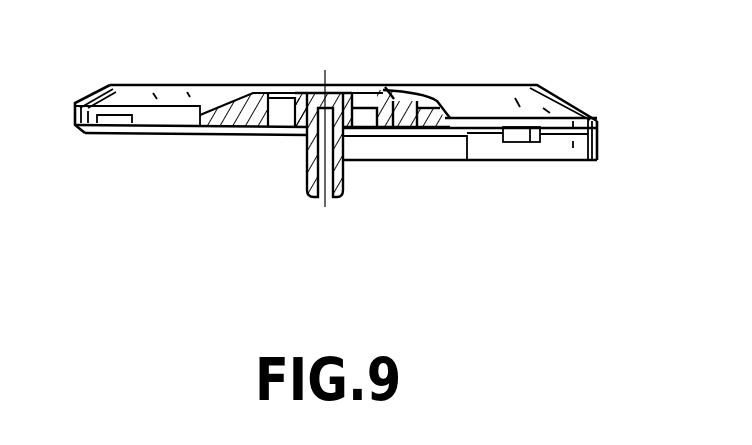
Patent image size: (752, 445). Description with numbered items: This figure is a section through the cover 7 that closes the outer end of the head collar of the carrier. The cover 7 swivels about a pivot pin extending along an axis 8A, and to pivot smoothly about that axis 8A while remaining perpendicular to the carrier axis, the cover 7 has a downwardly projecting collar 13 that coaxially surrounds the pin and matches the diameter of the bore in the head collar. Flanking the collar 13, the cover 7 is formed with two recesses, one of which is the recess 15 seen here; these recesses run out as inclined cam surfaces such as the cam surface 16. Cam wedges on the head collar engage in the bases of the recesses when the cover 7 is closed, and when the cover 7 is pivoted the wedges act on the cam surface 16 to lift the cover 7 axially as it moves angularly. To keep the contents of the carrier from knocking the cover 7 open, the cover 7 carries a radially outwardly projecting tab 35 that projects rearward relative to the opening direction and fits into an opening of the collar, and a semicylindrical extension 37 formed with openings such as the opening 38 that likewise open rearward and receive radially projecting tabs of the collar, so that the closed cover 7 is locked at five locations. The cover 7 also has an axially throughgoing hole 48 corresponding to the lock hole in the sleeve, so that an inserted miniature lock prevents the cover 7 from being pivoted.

The cover 7 is at (557, 103).
The axis 8A is at (332, 80).
The collar 13 is at (313, 198).
The recess 15 is at (290, 116).
The inclined cam surface 16 is at (418, 107).
The tab 35 is at (112, 122).
The semicylindrical extension 37 is at (580, 148).
The opening 38 is at (531, 143).
The hole 48 is at (363, 112).